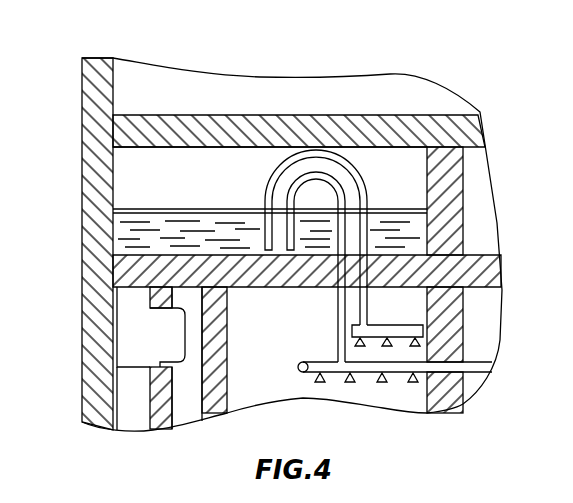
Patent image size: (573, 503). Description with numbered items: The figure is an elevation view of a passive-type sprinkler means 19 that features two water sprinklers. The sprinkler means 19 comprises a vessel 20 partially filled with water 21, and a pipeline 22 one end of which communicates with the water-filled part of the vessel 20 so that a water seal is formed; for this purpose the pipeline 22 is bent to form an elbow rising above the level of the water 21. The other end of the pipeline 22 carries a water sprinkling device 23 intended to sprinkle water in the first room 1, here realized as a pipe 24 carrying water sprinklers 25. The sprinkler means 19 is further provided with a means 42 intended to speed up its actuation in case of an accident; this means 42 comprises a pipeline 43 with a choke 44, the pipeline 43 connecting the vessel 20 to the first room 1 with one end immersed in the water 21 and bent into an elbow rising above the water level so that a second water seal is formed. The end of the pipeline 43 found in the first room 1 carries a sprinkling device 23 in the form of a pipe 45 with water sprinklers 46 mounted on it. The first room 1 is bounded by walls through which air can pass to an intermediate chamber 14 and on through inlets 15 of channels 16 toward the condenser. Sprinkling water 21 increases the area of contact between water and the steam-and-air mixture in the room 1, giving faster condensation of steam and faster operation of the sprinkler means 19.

The first room 1 is at (400, 317).
The intermediate chamber 14 is at (187, 416).
The inlets of channels 15 is at (130, 367).
The channels 16 is at (137, 416).
The passive-type sprinkler means 19 is at (177, 178).
The vessel 20 is at (113, 252).
The water 21 is at (113, 221).
The pipeline 22 is at (337, 316).
The water sprinkling device 23 is at (349, 338).
The pipe 24 is at (367, 372).
The water sprinklers 25 is at (384, 384).
The means for speeding up actuation 42 is at (371, 177).
The pipeline 43 is at (428, 227).
The choke 44 is at (364, 305).
The pipe 45 is at (424, 330).
The water sprinklers 46 is at (416, 347).